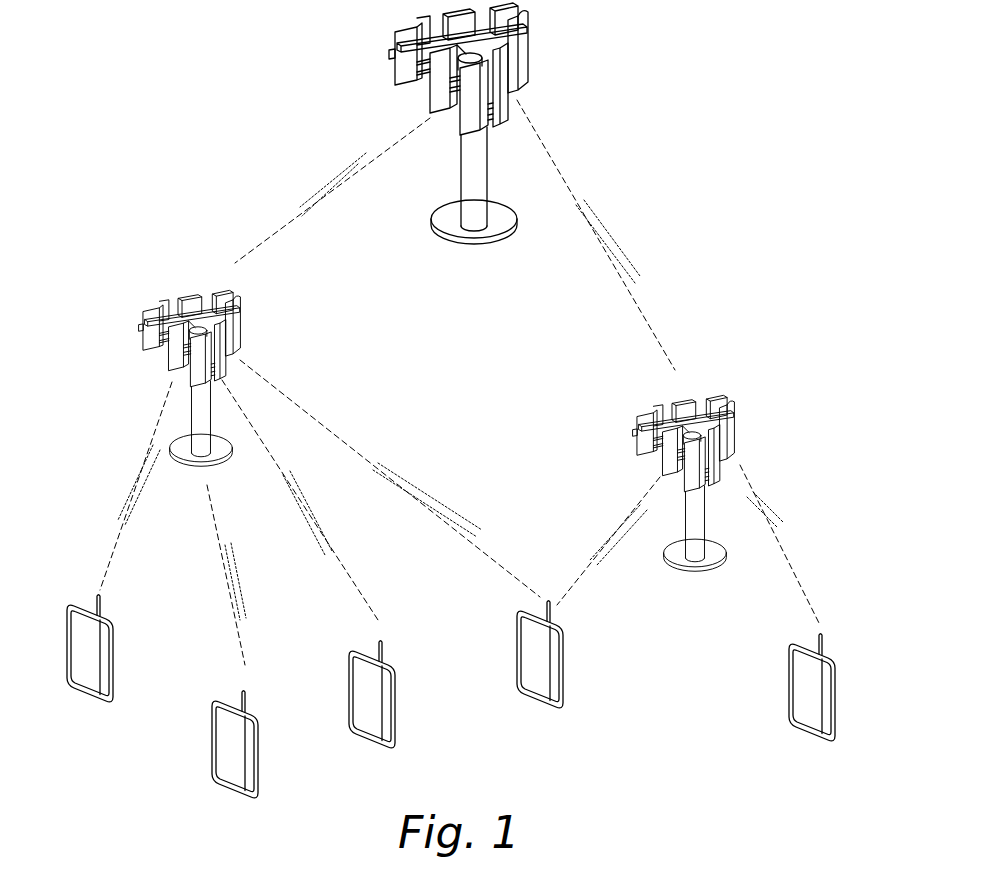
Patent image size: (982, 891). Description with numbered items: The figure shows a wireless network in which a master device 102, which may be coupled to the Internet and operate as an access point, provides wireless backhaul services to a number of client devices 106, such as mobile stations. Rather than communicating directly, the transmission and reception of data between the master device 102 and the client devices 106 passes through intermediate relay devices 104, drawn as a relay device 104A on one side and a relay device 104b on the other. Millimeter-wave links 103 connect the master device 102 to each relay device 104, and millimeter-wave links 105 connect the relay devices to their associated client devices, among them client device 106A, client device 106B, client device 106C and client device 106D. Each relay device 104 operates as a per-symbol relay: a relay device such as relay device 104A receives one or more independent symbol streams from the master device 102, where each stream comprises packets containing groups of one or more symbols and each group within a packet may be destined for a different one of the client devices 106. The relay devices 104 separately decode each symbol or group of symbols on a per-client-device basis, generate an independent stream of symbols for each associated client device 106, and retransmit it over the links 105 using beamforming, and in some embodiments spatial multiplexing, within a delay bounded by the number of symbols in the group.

The master device 102 is at (405, 93).
The millimeter-wave link 103 is at (322, 186).
The relay device 104 is at (443, 430).
The relay device 104A is at (148, 350).
The relay device 104b is at (728, 393).
The millimeter-wave link 105 is at (138, 472).
The client device 106 is at (451, 710).
The client device 106A is at (108, 655).
The client device 106B is at (253, 752).
The client device 106C is at (393, 690).
The client device 106D is at (560, 668).